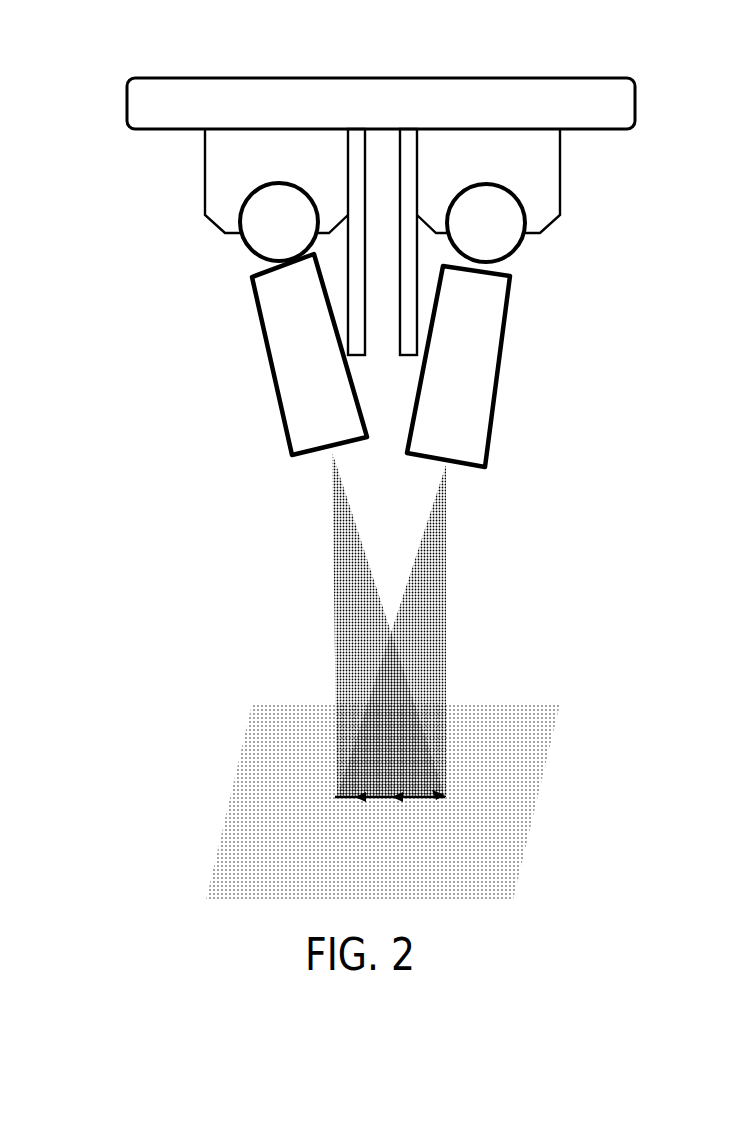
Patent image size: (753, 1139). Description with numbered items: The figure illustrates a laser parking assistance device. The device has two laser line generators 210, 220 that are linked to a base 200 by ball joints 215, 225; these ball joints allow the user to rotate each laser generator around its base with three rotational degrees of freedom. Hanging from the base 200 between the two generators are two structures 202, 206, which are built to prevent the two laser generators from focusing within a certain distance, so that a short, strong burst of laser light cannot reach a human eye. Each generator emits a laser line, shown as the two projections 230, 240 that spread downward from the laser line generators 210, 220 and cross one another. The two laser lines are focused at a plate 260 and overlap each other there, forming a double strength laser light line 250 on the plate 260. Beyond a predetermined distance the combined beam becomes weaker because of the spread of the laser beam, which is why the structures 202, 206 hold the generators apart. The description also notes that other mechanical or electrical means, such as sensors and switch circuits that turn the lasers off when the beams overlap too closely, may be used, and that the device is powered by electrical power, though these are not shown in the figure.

The base 200 is at (127, 108).
The structure 202 is at (357, 165).
The structure 206 is at (408, 165).
The laser line generator 210 is at (266, 349).
The ball joint 215 is at (241, 229).
The laser line generator 220 is at (490, 437).
The ball joint 225 is at (525, 232).
The first light beam 230 is at (333, 578).
The second light beam 240 is at (440, 708).
The illuminated line region 250 is at (417, 800).
The plate 260 is at (243, 760).